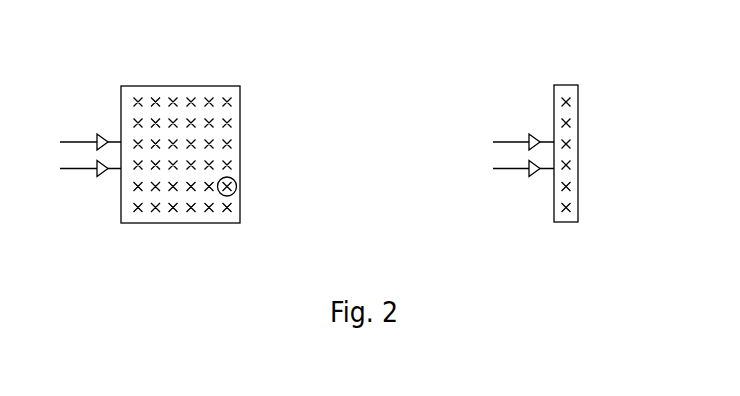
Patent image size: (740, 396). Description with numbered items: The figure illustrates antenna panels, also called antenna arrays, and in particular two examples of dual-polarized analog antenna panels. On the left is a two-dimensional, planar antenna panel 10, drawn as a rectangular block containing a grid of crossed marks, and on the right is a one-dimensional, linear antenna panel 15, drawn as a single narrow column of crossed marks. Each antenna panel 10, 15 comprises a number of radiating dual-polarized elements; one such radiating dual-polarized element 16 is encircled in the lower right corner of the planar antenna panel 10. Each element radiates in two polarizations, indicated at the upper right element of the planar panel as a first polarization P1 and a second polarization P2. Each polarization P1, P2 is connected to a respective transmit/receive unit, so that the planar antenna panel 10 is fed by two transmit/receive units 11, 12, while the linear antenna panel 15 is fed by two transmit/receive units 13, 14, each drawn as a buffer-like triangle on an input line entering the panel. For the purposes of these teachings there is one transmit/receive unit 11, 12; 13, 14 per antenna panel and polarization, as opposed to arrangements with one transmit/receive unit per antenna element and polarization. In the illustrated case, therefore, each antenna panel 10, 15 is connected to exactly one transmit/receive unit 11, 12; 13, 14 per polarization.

The two-dimensional antenna panel 10 is at (155, 86).
The transmit/receive unit 11 is at (84, 142).
The transmit/receive unit 12 is at (85, 170).
The transmit/receive unit 13 is at (513, 141).
The transmit/receive unit 14 is at (520, 170).
The one-dimensional antenna panel 15 is at (560, 85).
The radiating dual-polarized element 16 is at (237, 186).
The first polarization P1 is at (229, 88).
The second polarization P2 is at (242, 101).